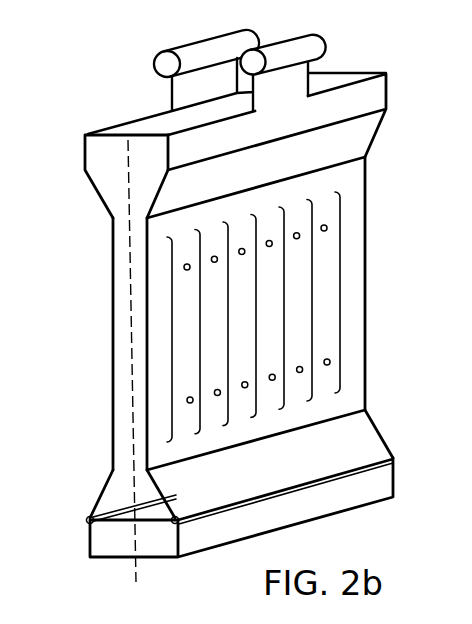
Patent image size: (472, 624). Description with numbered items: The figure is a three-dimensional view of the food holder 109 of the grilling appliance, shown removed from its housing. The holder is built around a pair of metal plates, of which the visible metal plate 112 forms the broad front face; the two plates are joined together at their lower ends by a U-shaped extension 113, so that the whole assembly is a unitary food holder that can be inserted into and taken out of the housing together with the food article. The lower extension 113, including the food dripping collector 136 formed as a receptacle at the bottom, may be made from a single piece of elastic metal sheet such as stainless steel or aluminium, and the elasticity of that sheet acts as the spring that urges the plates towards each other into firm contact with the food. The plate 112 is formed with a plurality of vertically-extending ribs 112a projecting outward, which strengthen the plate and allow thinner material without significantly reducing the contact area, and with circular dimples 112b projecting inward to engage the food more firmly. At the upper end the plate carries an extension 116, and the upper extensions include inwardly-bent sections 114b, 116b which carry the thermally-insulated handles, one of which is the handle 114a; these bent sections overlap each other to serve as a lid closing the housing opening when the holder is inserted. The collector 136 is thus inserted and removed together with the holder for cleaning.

The food holder 109 is at (113, 335).
The metal plate 112 is at (163, 387).
The vertically-extending rib 112a is at (343, 311).
The circular dimple 112b is at (328, 228).
The U-shaped extension 113 is at (99, 496).
The thermally-insulated handle 114a is at (220, 43).
The inwardly-bent section 114b is at (113, 140).
The extension 116 is at (368, 100).
The inwardly-bent section 116b is at (316, 46).
The food dripping collector 136 is at (108, 558).